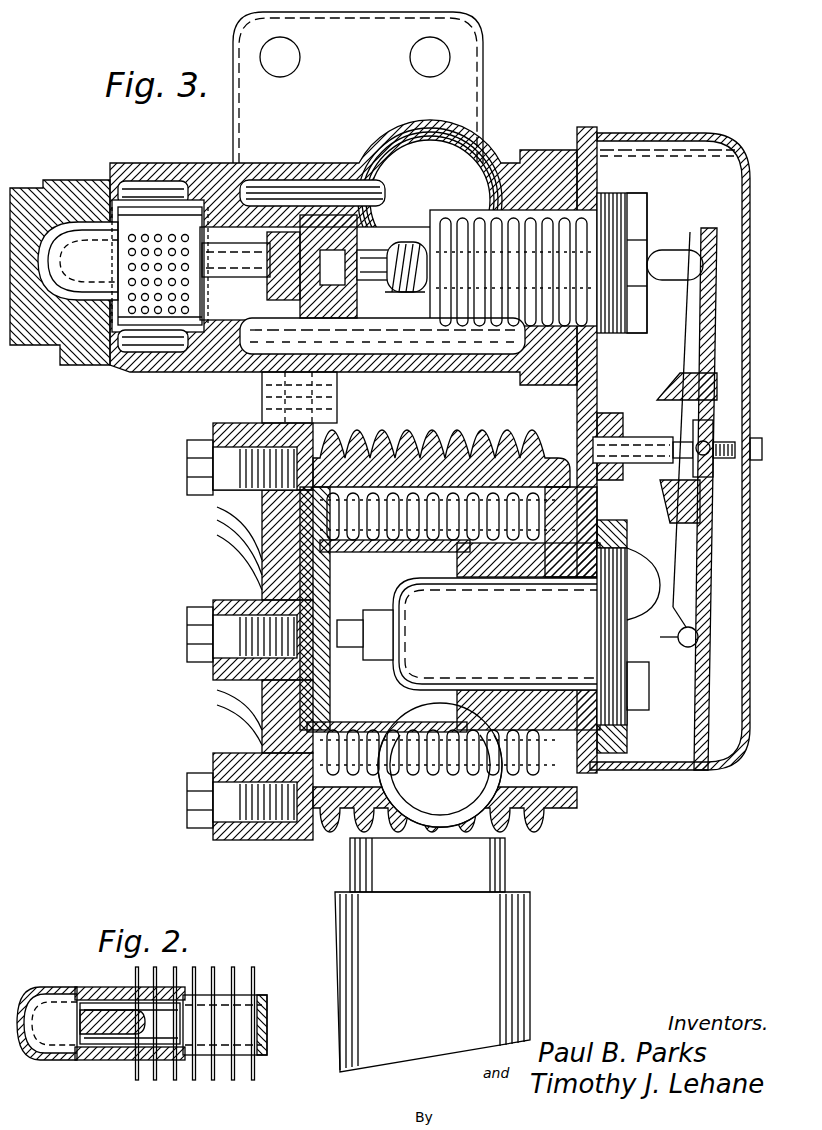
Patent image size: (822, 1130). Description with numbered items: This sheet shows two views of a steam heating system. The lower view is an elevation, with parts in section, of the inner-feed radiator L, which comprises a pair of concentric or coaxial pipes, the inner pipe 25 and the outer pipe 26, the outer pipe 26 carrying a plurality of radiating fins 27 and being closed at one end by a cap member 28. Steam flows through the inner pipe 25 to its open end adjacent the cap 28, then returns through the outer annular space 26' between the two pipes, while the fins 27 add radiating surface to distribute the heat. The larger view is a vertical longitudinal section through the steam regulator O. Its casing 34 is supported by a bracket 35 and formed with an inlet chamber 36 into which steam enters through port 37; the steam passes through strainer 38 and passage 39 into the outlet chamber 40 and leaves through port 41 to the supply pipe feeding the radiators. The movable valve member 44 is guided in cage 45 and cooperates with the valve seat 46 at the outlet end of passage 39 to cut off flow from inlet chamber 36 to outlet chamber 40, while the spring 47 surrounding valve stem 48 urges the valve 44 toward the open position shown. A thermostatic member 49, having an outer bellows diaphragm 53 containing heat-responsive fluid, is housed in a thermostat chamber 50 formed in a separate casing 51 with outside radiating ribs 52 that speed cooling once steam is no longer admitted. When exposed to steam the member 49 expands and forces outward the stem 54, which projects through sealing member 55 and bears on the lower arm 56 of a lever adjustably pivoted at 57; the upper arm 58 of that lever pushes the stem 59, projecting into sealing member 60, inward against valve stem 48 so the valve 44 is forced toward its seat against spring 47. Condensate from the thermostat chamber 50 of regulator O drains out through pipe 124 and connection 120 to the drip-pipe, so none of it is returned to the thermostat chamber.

In FIG. 3, the casing 34 is at (378, 142).
In FIG. 3, the bracket 35 is at (484, 62).
In FIG. 3, the inlet chamber 36 is at (125, 190).
In FIG. 3, the port 37 is at (160, 207).
In FIG. 3, the strainer 38 is at (150, 325).
In FIG. 3, the passage 39 is at (232, 240).
In FIG. 3, the outlet chamber 40 is at (330, 196).
In FIG. 3, the port 41 is at (393, 166).
In FIG. 3, the movable valve member 44 is at (300, 312).
In FIG. 3, the cage 45 is at (364, 300).
In FIG. 3, the valve seat 46 is at (268, 278).
In FIG. 3, the spring 47 is at (396, 292).
In FIG. 3, the valve stem 48 is at (372, 262).
In FIG. 3, the thermostatic member 49 is at (330, 728).
In FIG. 3, the thermostat chamber 50 is at (374, 482).
In FIG. 3, the separate casing 51 is at (548, 475).
In FIG. 3, the radiating ribs 52 is at (432, 452).
In FIG. 3, the bellows diaphragm 53 is at (424, 770).
In FIG. 3, the stem 54 is at (699, 637).
In FIG. 3, the sealing member 55 is at (398, 604).
In FIG. 3, the lower arm 56 is at (706, 572).
In FIG. 3, the lever pivot 57 is at (714, 447).
In FIG. 3, the upper arm 58 is at (716, 356).
In FIG. 3, the stem 59 is at (668, 255).
In FIG. 3, the sealing member 60 is at (455, 218).
In FIG. 3, the regulator O is at (245, 374).
In FIG. 3, the connection 120 is at (532, 948).
In FIG. 3, the pipe 124 is at (508, 870).
In FIG. 2, the inner pipe 25 is at (130, 1030).
In FIG. 2, the outer pipe 26 is at (190, 1008).
In FIG. 2, the outer annular space 26' is at (130, 1002).
In FIG. 2, the radiating fins 27 is at (160, 1080).
In FIG. 2, the cap member 28 is at (45, 1060).
In FIG. 2, the radiator L is at (221, 975).